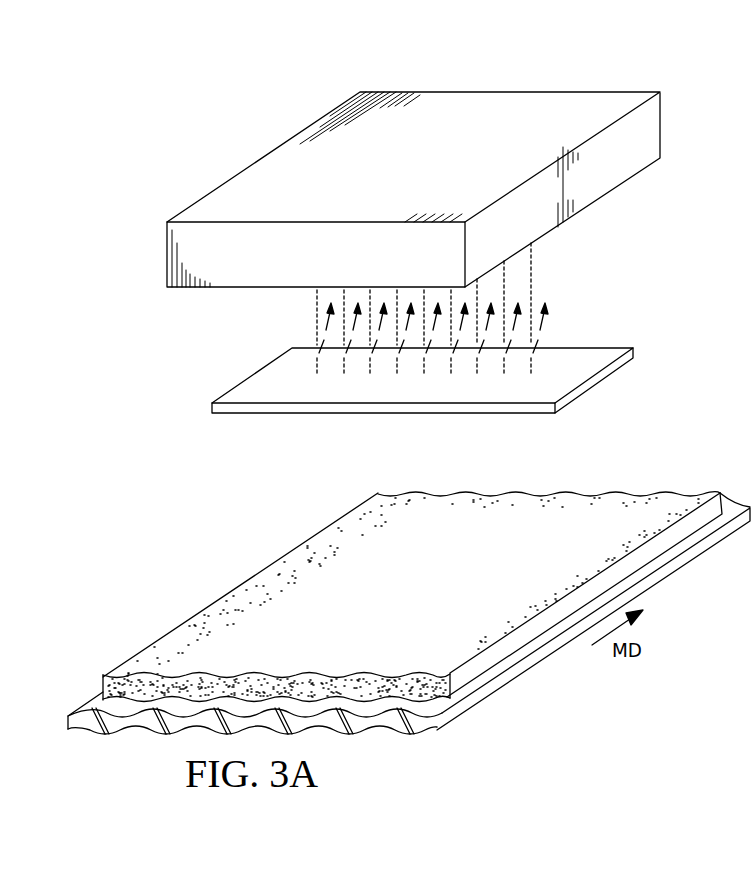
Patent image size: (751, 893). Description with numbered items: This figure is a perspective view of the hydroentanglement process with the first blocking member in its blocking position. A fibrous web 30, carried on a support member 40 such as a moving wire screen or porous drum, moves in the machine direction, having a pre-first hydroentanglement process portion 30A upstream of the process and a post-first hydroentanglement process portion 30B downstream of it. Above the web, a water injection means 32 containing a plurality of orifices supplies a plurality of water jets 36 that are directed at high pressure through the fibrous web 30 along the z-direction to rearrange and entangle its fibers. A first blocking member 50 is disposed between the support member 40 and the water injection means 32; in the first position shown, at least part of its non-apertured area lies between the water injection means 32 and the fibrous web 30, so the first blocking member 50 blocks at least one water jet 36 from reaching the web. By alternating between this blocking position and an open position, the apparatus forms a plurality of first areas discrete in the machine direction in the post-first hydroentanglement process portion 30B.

The water injection means 32 is at (493, 102).
The water jet 36 is at (316, 298).
The first blocking member 50 is at (272, 378).
The fibrous web 30 is at (222, 598).
The pre-first hydroentanglement process portion 30A is at (442, 658).
The post-first hydroentanglement process portion 30B is at (534, 508).
The support member 40 is at (133, 731).